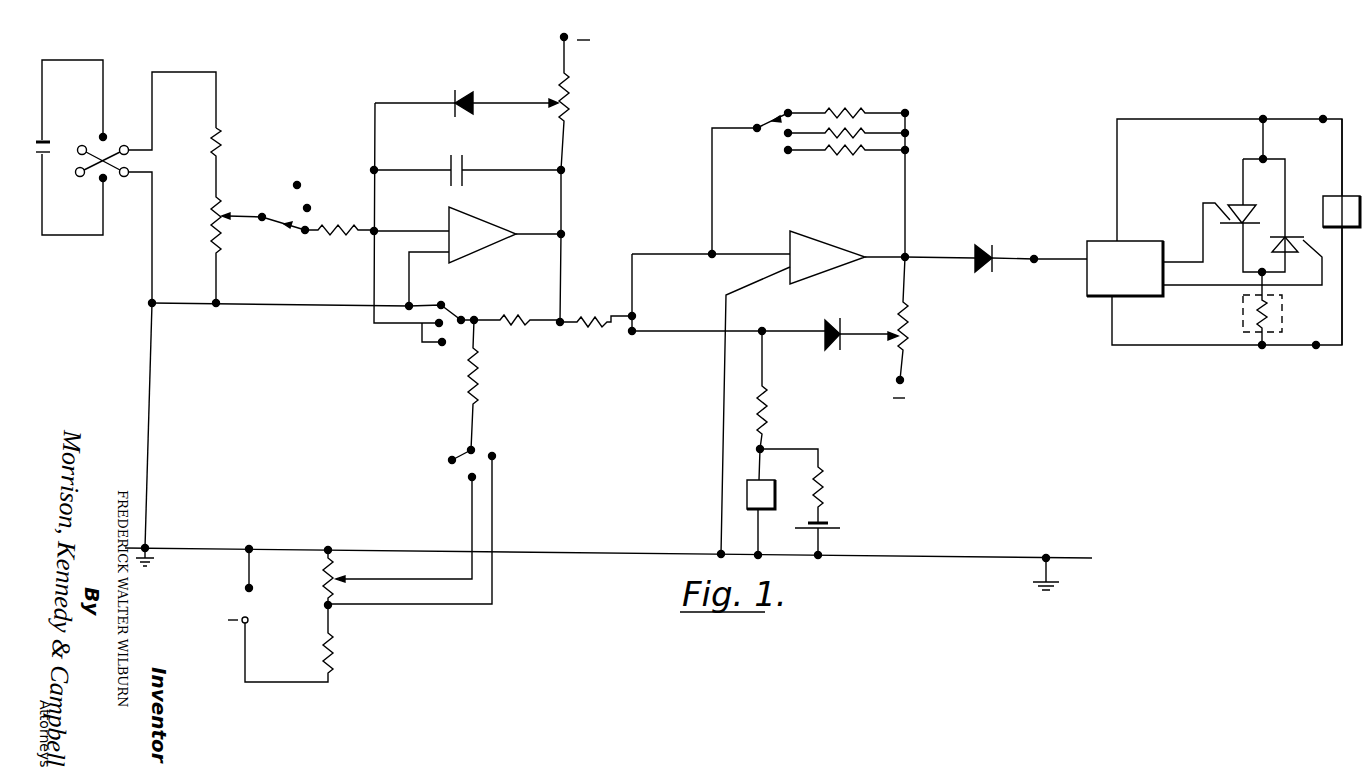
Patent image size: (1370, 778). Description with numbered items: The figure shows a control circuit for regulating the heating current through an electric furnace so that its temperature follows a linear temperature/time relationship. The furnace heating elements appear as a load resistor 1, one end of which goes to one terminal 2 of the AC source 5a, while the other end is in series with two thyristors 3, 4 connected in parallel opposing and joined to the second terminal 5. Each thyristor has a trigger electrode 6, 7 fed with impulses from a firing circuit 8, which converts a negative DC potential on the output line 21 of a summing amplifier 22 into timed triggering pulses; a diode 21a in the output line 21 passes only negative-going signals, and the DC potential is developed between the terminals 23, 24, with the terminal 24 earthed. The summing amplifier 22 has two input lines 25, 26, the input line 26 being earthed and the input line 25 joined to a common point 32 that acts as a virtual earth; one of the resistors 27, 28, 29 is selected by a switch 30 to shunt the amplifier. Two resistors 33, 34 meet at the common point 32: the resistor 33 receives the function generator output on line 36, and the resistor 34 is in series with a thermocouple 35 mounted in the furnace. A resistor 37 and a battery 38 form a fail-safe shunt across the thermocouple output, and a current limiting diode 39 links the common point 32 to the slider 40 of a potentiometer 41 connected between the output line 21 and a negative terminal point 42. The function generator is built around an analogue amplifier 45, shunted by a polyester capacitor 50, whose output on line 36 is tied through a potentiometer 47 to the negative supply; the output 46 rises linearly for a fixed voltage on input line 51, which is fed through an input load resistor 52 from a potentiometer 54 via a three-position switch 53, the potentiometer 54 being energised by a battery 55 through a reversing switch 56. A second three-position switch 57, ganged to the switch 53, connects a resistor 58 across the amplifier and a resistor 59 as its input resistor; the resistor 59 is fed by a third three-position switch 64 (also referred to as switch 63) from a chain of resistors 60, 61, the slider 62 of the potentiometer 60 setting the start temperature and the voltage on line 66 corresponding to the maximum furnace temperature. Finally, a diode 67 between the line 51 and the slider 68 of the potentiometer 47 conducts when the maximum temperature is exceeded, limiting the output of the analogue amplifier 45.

The load resistor 1 is at (1250, 308).
The terminal 2 is at (1289, 360).
The thyristor 3 is at (1245, 212).
The thyristor 4 is at (1274, 245).
The second terminal 5 is at (1294, 108).
The AC source 5a is at (1353, 224).
The trigger electrode 6 is at (1226, 210).
The trigger electrode 7 is at (1312, 243).
The firing circuit 8 is at (1128, 285).
The output line 21 is at (1024, 256).
The diode 21a is at (956, 246).
The summing amplifier 22 is at (832, 255).
The terminal 23 is at (1037, 256).
The terminal 24 is at (1049, 561).
The input line 25 is at (738, 253).
The input line 26 is at (764, 277).
The resistor 27 is at (858, 118).
The resistor 28 is at (828, 130).
The resistor 29 is at (848, 163).
The switch 30 is at (763, 120).
The common point 32 is at (648, 320).
The resistor 33 is at (596, 310).
The resistor 34 is at (764, 406).
The thermocouple 35 is at (750, 489).
The line 36 is at (560, 259).
The resistor 37 is at (825, 500).
The battery 38 is at (850, 523).
The current limiting diode 39 is at (838, 328).
The slider 40 is at (888, 336).
The potentiometer 41 is at (908, 325).
The terminal point 42 is at (904, 383).
The analogue amplifier 45 is at (484, 238).
The amplifier output 46 is at (527, 234).
The potentiometer 47 is at (568, 110).
The polyester capacitor 50 is at (464, 167).
The input line 51 is at (390, 231).
The input load resistor 52 is at (339, 246).
The three-position switch 53 is at (272, 223).
The potentiometer 54 is at (214, 226).
The battery 55 is at (52, 148).
The reversing switch 56 is at (113, 143).
The second three-position switch 57 is at (447, 346).
The resistor 58 is at (513, 318).
The resistor 59 is at (478, 377).
The resistor 60 is at (322, 580).
The resistor 61 is at (296, 615).
The slider 62 is at (340, 578).
The switch 63 is at (466, 480).
The third three-position switch 64 is at (462, 453).
The line 66 is at (497, 580).
The diode 67 is at (480, 80).
The slider 68 is at (558, 104).